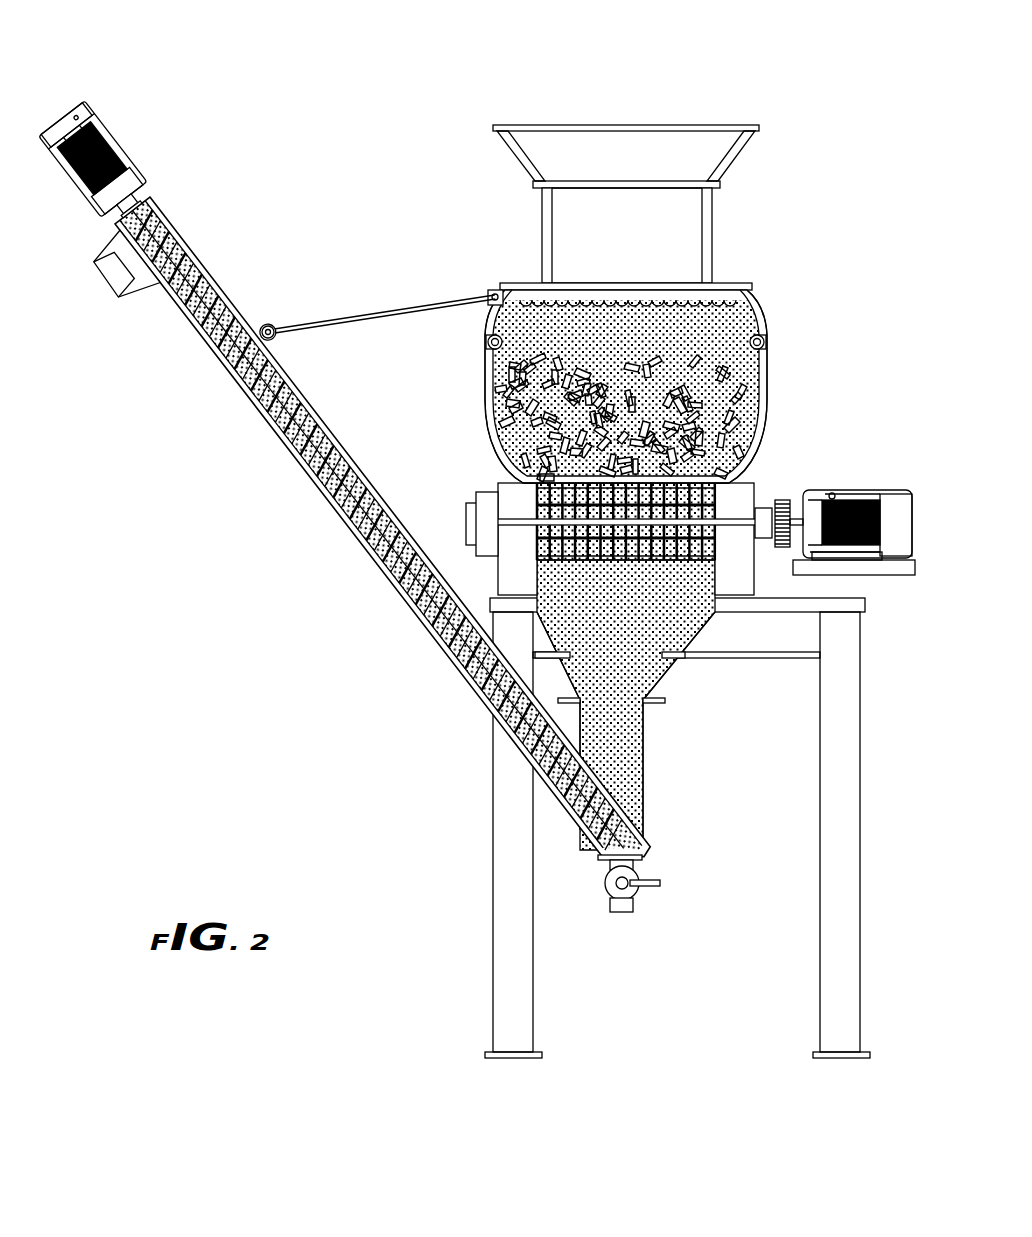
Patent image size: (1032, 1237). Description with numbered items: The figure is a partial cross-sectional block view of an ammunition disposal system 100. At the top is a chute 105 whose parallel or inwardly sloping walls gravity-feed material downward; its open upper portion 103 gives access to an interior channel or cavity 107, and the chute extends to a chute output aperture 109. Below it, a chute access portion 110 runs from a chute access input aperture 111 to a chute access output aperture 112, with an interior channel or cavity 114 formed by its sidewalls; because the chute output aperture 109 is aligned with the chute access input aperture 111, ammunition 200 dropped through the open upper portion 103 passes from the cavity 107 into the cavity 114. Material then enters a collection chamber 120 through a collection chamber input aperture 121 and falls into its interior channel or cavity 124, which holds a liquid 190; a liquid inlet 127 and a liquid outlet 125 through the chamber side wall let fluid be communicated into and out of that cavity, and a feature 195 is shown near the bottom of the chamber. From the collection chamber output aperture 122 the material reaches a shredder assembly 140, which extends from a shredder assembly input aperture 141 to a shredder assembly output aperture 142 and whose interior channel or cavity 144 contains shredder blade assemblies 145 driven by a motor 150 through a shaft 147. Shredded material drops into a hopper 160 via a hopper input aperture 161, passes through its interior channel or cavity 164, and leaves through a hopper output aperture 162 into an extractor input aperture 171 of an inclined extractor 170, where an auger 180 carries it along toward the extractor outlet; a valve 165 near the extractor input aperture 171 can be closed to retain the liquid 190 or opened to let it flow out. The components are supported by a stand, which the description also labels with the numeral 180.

The ammunition disposal system 100 is at (263, 66).
The open upper portion 103 is at (670, 114).
The chute 105 is at (742, 160).
The interior channel or cavity 107 is at (580, 137).
The chute output aperture 109 is at (712, 190).
The chute access portion 110 is at (635, 214).
The chute access input aperture 111 is at (555, 186).
The chute access output aperture 112 is at (550, 283).
The interior channel or cavity 114 is at (580, 240).
The collection chamber 120 is at (588, 363).
The collection chamber input aperture 121 is at (648, 290).
The collection chamber output aperture 122 is at (518, 456).
The interior channel or cavity 124 is at (562, 340).
The liquid outlet 125 is at (762, 345).
The liquid inlet 127 is at (487, 346).
The shredder assembly 140 is at (662, 552).
The shredder assembly input aperture 141 is at (535, 477).
The shredder assembly output aperture 142 is at (560, 592).
The interior channel or cavity 144 is at (680, 582).
The shredder blade assemblies 145 is at (748, 476).
The shaft 147 is at (722, 524).
The motor 150 is at (850, 488).
The hopper 160 is at (735, 705).
The hopper input aperture 161 is at (657, 594).
The hopper output aperture 162 is at (606, 792).
The interior channel or cavity 164 is at (614, 719).
The valve 165 is at (628, 895).
The extractor 170 is at (339, 498).
The extractor input aperture 171 is at (633, 827).
The auger 180 is at (205, 265).
The liquid 190 is at (662, 338).
The drum bottom outlet 195 is at (770, 430).
The ammunition 200 is at (512, 401).